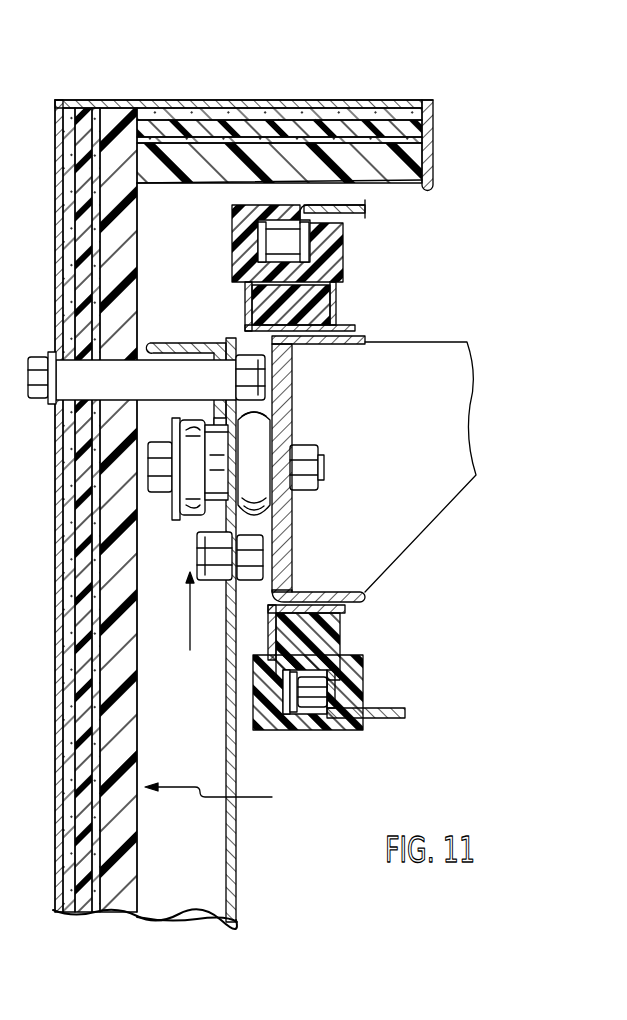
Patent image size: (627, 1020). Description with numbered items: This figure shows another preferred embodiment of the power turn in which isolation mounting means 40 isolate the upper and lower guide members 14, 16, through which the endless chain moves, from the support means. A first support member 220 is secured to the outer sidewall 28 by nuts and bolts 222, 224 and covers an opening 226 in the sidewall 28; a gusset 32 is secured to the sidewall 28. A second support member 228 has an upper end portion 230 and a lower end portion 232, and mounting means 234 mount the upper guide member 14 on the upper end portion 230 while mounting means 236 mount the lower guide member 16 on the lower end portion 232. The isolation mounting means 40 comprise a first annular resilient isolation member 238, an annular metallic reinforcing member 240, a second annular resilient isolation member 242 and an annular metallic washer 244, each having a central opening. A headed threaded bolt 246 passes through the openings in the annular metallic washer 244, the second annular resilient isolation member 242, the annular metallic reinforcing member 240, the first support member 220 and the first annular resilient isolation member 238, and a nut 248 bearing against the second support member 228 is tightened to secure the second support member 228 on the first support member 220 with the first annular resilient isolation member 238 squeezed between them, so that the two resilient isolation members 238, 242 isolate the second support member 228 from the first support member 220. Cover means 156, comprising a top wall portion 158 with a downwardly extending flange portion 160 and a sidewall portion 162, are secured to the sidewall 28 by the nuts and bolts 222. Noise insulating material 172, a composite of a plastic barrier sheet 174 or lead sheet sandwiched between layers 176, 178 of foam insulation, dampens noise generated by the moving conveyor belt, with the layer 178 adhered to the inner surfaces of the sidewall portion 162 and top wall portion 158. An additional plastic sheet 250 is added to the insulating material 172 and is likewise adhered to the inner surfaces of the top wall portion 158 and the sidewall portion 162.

The upper guide member 14 is at (342, 265).
The lower guide member 16 is at (340, 684).
The outer sidewall 28 is at (238, 829).
The gusset 32 is at (412, 530).
The isolation mounting means 40 is at (194, 624).
The cover means 156 is at (303, 503).
The top wall portion 158 is at (77, 105).
The flange portion 160 is at (436, 172).
The sidewall portion 162 is at (62, 150).
The noise insulating material 172 is at (229, 799).
The plastic barrier sheet 174 is at (410, 140).
The layer of foam insulation 176 is at (408, 177).
The layer of foam insulation 178 is at (408, 124).
The first support member 220 is at (234, 343).
The nuts and bolts 222 is at (184, 365).
The nuts and bolts 224 is at (212, 580).
The opening 226 is at (222, 428).
The second support member 228 is at (290, 525).
The upper end portion 230 is at (322, 469).
The lower end portion 232 is at (290, 585).
The mounting means 234 is at (336, 331).
The mounting means 236 is at (340, 605).
The first annular resilient isolation member 238 is at (268, 502).
The annular metallic reinforcing member 240 is at (220, 455).
The second annular resilient isolation member 242 is at (196, 514).
The annular metallic washer 244 is at (196, 515).
The headed threaded bolt 246 is at (162, 490).
The nut 248 is at (306, 462).
The plastic sheet 250 is at (402, 117).